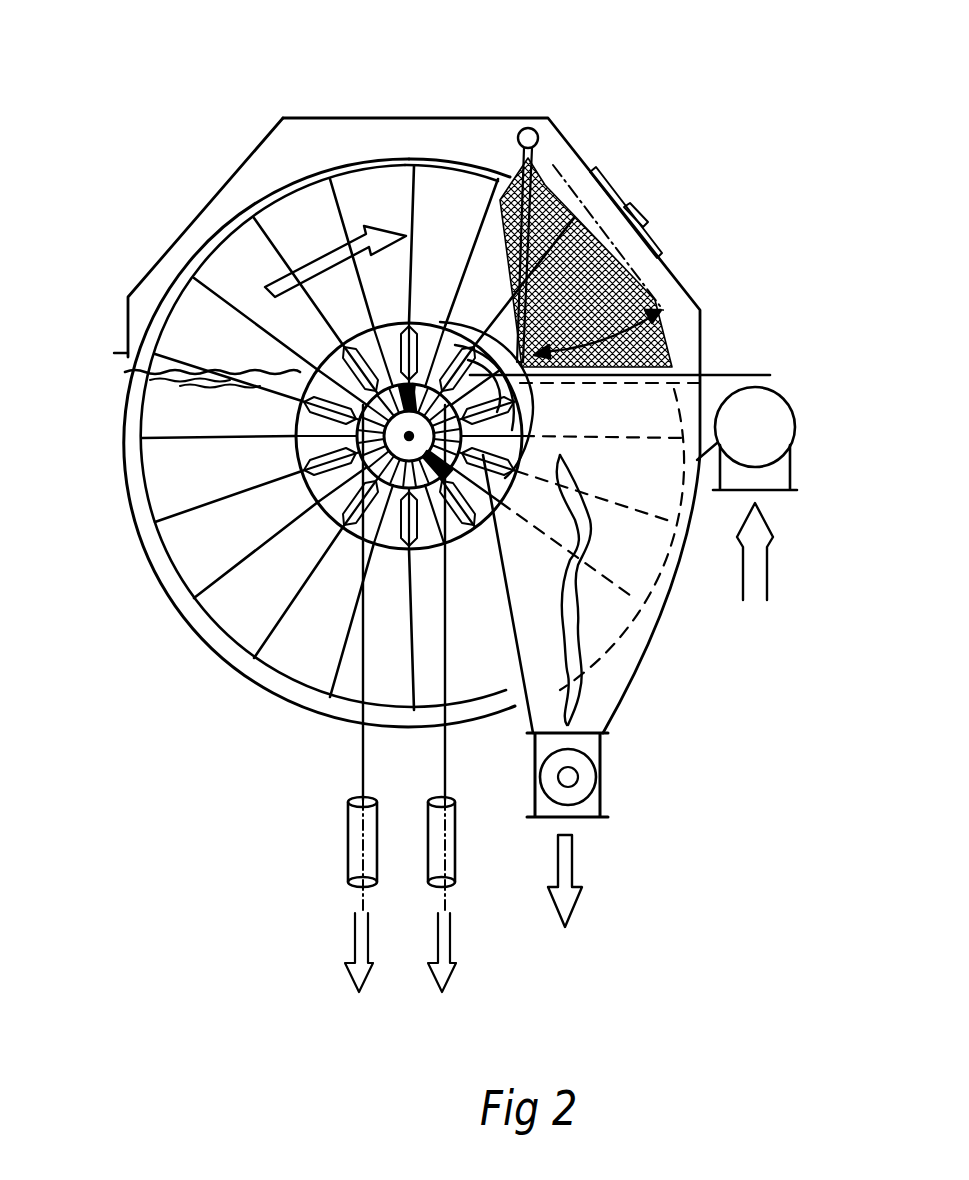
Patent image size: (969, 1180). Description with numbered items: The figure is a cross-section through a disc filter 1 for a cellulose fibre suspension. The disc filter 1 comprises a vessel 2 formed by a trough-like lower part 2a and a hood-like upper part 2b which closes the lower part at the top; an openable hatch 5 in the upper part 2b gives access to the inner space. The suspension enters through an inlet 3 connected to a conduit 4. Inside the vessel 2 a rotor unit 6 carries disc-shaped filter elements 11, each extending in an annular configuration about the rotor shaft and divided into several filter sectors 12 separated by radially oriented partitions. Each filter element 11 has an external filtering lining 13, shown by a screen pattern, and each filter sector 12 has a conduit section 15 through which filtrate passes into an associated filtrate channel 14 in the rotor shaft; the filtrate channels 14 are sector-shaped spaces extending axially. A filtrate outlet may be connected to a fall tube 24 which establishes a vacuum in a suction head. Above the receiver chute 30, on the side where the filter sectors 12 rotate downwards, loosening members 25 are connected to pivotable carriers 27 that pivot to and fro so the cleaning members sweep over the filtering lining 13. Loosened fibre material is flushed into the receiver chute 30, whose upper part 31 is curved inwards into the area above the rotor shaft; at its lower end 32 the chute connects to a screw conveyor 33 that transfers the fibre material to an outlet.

The disc filter 1 is at (491, 366).
The vessel 2 is at (370, 374).
The lower part 2a is at (285, 443).
The upper part 2b is at (195, 237).
The inlet 3 is at (779, 396).
The conduit 4 is at (782, 521).
The openable hatch 5 is at (621, 215).
The rotor unit 6 is at (301, 205).
The filter element 11 is at (412, 364).
The filter sector 12 is at (373, 367).
The filtering lining 13 is at (648, 262).
The filtrate channel 14 is at (373, 436).
The conduit section 15 is at (354, 455).
The fall tube 24 is at (348, 698).
The loosening member 25 is at (504, 96).
The pivotable carrier 27 is at (565, 222).
The receiver chute 30 is at (468, 347).
The curved part 31 is at (476, 360).
The lower end 32 is at (613, 810).
The conveyor 33 is at (602, 776).